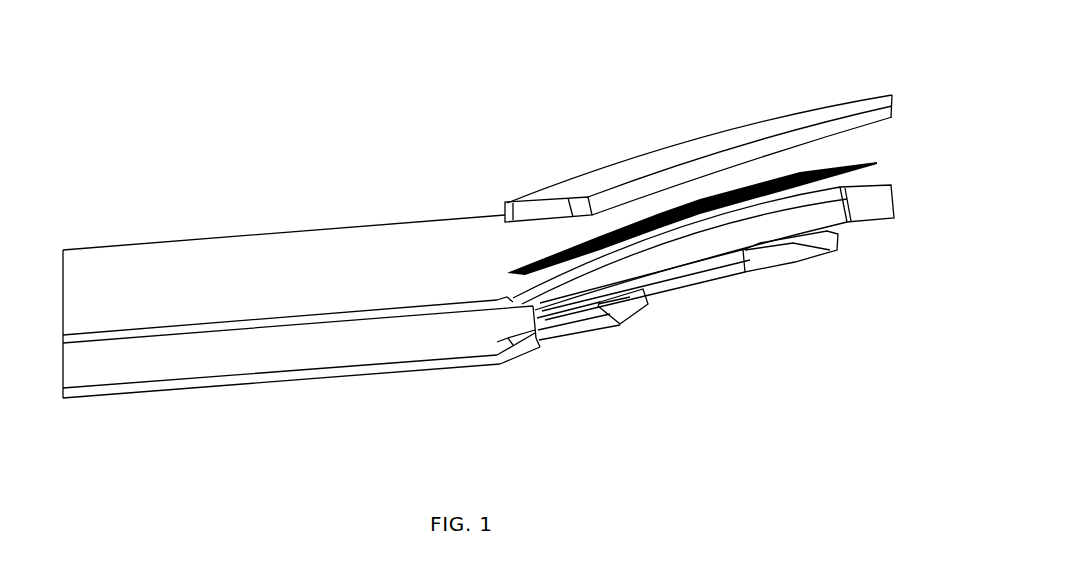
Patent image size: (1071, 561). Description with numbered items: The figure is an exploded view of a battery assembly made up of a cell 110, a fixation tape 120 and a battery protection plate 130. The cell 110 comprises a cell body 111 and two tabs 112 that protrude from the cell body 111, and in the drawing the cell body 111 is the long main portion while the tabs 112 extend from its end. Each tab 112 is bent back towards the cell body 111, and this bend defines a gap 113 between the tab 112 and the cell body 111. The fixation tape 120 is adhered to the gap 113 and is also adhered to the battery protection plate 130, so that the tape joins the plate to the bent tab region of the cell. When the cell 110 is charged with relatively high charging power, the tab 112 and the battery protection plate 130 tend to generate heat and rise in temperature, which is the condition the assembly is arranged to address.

The cell 110 is at (283, 224).
The cell body 111 is at (442, 367).
The tab 112 is at (820, 262).
The gap 113 is at (640, 323).
The fixation tape 120 is at (855, 152).
The battery protection plate 130 is at (840, 97).